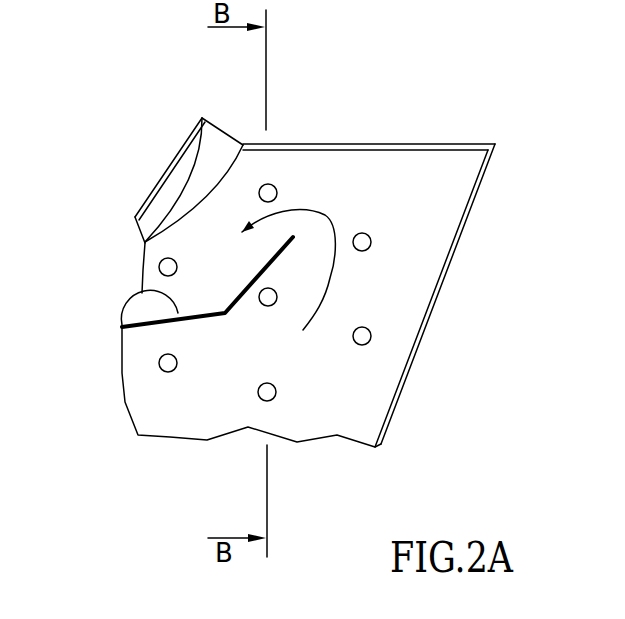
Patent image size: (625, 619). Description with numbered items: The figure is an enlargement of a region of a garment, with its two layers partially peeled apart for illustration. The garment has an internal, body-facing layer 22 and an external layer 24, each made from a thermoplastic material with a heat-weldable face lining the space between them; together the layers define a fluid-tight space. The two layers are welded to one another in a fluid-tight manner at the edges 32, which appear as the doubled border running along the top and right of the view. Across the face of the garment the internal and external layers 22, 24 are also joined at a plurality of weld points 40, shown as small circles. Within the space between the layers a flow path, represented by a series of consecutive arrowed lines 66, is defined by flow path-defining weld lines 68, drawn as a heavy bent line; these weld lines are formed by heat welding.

The internal body-facing layer 22 is at (215, 145).
The external layer 24 is at (158, 210).
The edges 32 is at (412, 143).
The weld points 40 is at (365, 339).
The arrowed lines 66 is at (330, 277).
The flow path-defining weld lines 68 is at (142, 293).